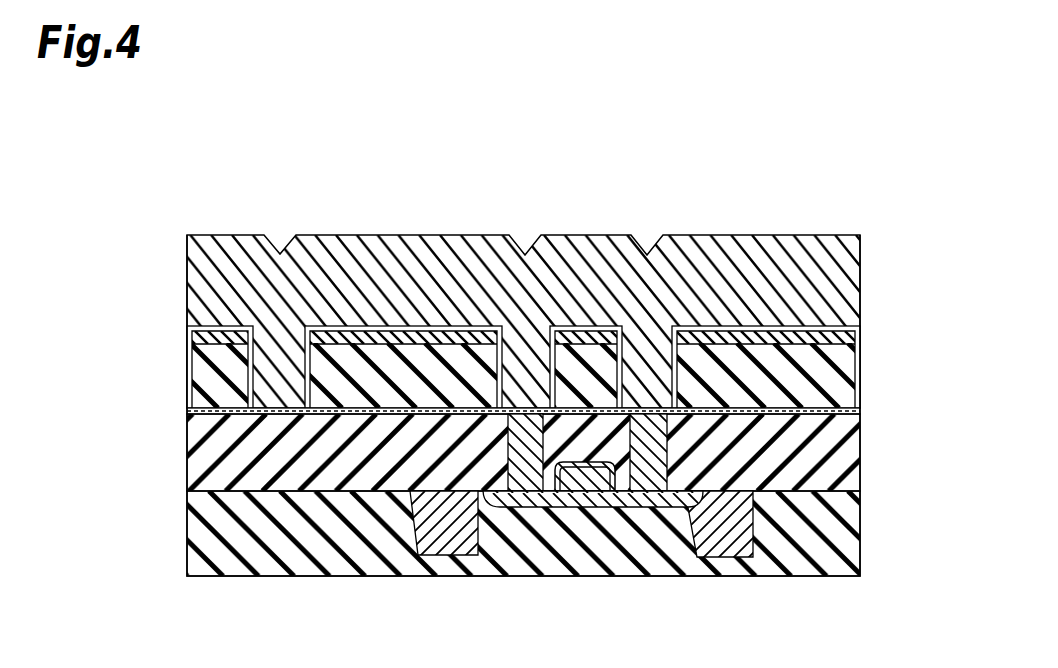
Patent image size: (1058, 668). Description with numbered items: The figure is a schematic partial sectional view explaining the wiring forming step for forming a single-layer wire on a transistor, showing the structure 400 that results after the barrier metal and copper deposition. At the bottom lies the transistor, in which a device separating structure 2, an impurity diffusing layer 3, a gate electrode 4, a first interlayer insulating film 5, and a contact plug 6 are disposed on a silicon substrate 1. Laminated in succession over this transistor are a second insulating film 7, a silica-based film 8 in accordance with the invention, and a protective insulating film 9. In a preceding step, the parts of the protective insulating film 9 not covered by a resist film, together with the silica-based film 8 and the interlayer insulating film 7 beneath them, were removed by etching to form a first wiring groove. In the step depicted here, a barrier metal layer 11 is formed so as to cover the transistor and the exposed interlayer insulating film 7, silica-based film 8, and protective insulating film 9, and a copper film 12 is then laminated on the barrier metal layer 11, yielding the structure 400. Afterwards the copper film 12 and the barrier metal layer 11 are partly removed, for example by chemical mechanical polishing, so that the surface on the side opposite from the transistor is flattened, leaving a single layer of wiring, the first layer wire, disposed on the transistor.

The structure 400 is at (822, 176).
The silicon substrate 1 is at (858, 535).
The device separating structure 2 is at (733, 540).
The impurity diffusing layer 3 is at (651, 505).
The gate electrode 4 is at (586, 488).
The first interlayer insulating film 5 is at (858, 458).
The contact plug 6 is at (528, 483).
The second insulating film 7 is at (858, 411).
The silica-based film 8 is at (858, 380).
The protective insulating film 9 is at (858, 340).
The barrier metal layer 11 is at (255, 389).
The copper film 12 is at (270, 361).